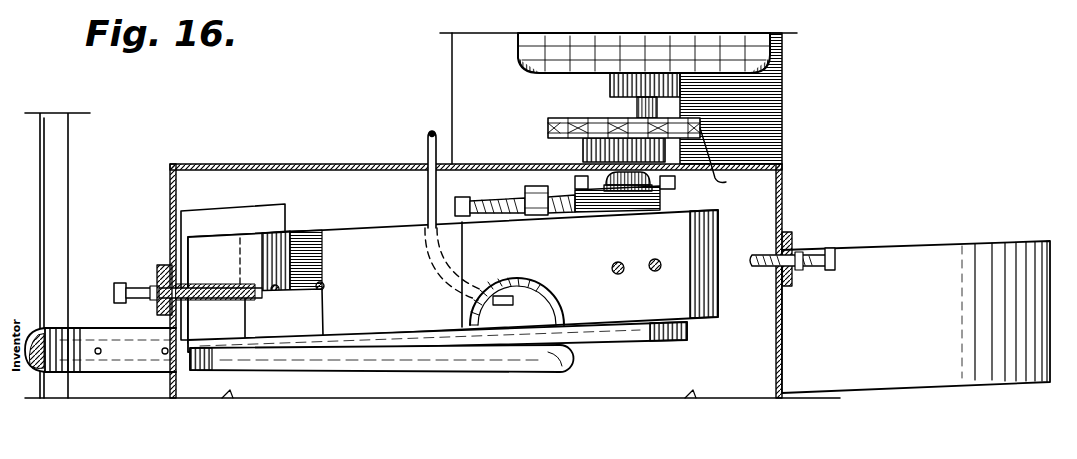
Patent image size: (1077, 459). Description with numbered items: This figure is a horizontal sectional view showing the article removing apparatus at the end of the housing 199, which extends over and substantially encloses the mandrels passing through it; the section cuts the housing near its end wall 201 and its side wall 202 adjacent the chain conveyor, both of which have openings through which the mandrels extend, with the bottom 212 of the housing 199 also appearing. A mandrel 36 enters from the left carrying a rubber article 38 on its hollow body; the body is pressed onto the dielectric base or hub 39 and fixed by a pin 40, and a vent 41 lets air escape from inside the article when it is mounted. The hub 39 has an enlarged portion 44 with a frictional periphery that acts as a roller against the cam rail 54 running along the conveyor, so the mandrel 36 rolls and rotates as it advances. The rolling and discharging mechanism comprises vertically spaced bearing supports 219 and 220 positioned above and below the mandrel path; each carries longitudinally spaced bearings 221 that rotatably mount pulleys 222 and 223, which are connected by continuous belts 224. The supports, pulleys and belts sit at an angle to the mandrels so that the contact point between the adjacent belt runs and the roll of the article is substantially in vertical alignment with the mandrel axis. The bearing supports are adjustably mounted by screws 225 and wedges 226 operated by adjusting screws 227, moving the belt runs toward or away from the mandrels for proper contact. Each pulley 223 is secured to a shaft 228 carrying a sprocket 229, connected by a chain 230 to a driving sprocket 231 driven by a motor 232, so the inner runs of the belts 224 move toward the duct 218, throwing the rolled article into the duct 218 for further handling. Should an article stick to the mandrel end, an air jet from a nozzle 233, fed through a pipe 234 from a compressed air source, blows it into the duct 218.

The cam rail 54 is at (66, 153).
The bottom of the housing 212 is at (200, 178).
The end wall 201 is at (274, 166).
The side wall 202 is at (170, 198).
The housing 199 is at (171, 220).
The adjusting screw 227 is at (114, 292).
The enlarged portion 44 is at (52, 328).
The base or hub portion 39 is at (66, 328).
The pin 40 is at (98, 355).
The aperture or vent 41 is at (164, 355).
The mandrel 36 is at (386, 372).
The rubber article 38 is at (566, 370).
The bearing support 219 is at (362, 245).
The screw 225 is at (325, 283).
The wedge 226 is at (330, 293).
The pulley 222 is at (262, 339).
The continuous belt 224 is at (412, 336).
The nozzle 233 is at (534, 276).
The bearing support 220 is at (540, 302).
The bearing 221 is at (614, 200).
The shaft 228 is at (662, 205).
The pulley 223 is at (653, 336).
The pipe 234 is at (428, 158).
The sprocket 229 is at (568, 134).
The chain 230 is at (548, 130).
The driving sprocket 231 is at (727, 160).
The motor 232 is at (748, 24).
The duct 218 is at (922, 255).